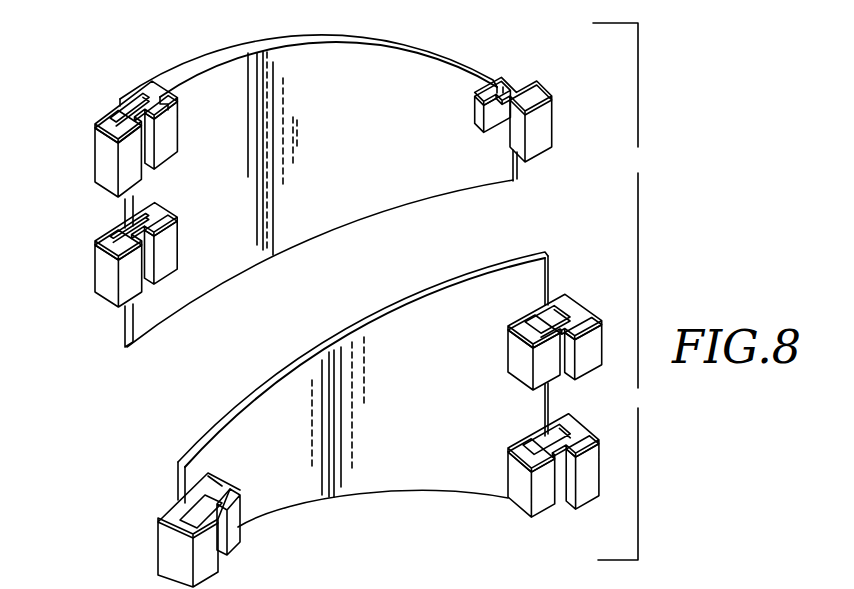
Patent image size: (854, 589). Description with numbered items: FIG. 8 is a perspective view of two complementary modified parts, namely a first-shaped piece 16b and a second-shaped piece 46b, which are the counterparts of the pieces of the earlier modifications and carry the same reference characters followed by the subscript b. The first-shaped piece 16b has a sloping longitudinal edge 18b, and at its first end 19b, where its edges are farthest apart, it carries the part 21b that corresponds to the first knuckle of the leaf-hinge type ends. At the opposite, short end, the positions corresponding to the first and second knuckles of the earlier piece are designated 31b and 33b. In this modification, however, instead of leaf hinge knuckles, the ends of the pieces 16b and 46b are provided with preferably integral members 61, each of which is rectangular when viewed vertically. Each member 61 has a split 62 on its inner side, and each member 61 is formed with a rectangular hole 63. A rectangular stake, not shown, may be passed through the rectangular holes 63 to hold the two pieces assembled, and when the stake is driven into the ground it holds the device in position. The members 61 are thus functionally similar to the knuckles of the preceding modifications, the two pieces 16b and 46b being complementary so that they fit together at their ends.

The first-shaped piece 16b is at (318, 182).
The sloping longitudinal edge 18b is at (228, 46).
The first knuckle 21b is at (172, 105).
The first knuckle at second end 31b is at (480, 115).
The first end 19b is at (363, 371).
The second-shaped piece 46b is at (357, 343).
The second knuckle at second end 33b is at (230, 533).
The member 61 is at (100, 155).
The split 62 is at (157, 165).
The rectangular hole 63 is at (118, 108).